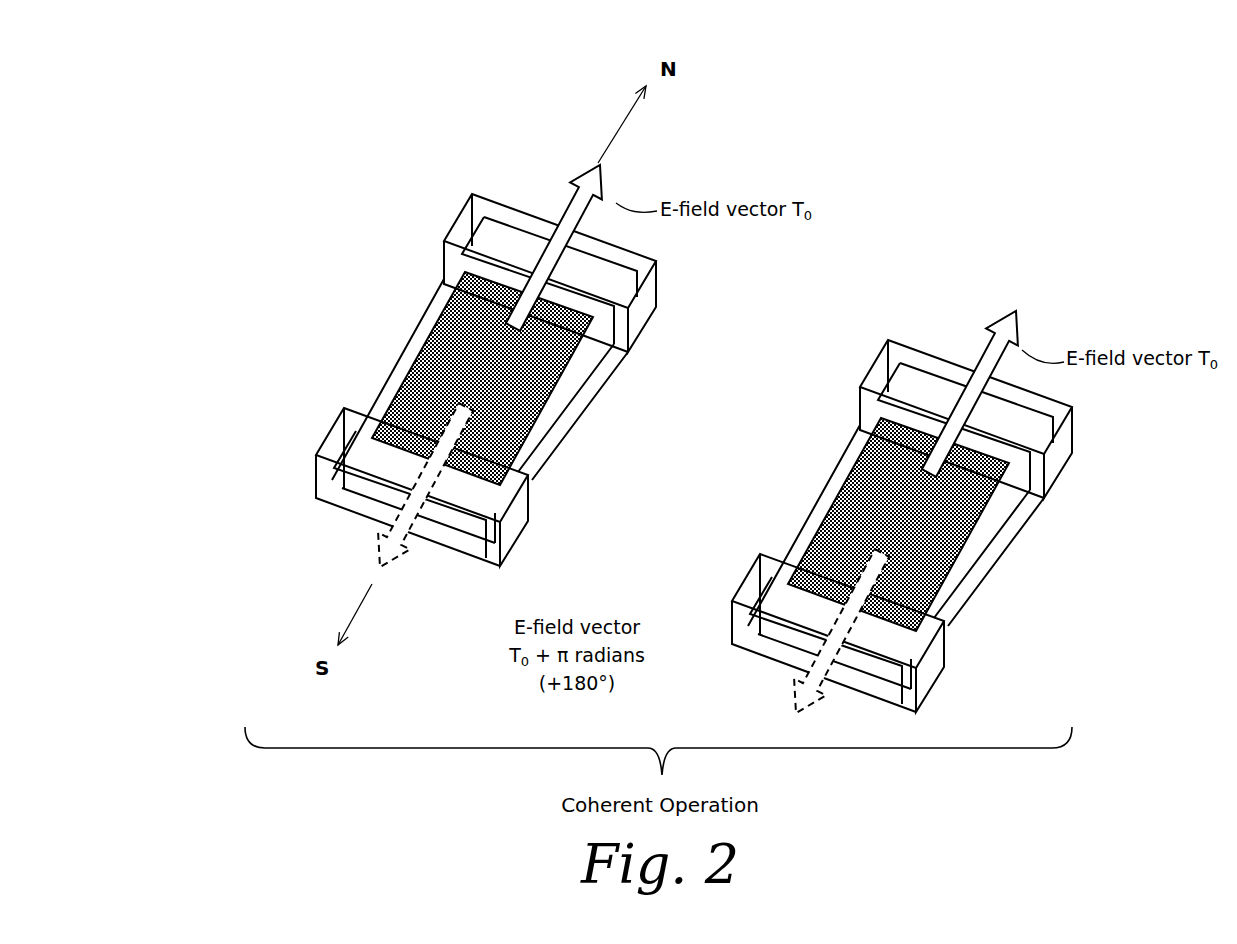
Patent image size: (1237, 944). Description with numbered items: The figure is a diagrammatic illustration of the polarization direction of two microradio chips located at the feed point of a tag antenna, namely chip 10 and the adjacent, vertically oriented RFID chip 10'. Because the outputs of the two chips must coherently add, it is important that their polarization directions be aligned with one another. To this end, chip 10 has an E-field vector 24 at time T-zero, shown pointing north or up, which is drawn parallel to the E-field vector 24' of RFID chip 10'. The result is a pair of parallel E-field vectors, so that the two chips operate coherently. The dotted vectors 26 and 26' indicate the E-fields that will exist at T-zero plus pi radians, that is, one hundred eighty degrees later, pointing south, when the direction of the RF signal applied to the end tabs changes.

The chip 10 is at (486, 334).
The E-field vector 24 is at (543, 241).
The dotted vector 26 is at (390, 462).
The RFID chip 10' is at (902, 500).
The E-field vector 24' is at (961, 389).
The dotted vector 26' is at (810, 603).